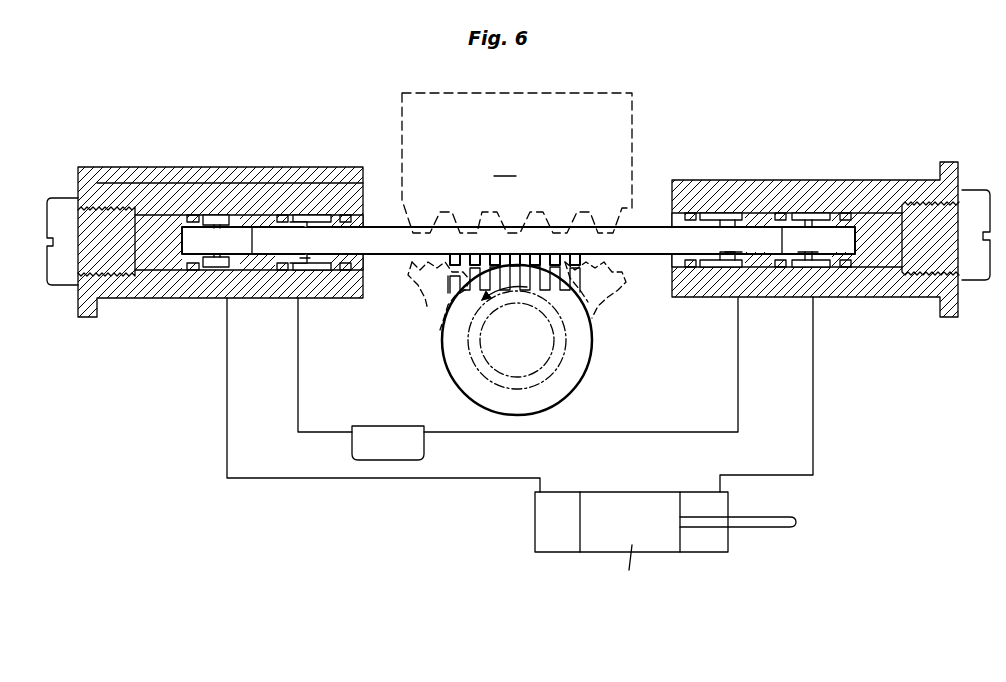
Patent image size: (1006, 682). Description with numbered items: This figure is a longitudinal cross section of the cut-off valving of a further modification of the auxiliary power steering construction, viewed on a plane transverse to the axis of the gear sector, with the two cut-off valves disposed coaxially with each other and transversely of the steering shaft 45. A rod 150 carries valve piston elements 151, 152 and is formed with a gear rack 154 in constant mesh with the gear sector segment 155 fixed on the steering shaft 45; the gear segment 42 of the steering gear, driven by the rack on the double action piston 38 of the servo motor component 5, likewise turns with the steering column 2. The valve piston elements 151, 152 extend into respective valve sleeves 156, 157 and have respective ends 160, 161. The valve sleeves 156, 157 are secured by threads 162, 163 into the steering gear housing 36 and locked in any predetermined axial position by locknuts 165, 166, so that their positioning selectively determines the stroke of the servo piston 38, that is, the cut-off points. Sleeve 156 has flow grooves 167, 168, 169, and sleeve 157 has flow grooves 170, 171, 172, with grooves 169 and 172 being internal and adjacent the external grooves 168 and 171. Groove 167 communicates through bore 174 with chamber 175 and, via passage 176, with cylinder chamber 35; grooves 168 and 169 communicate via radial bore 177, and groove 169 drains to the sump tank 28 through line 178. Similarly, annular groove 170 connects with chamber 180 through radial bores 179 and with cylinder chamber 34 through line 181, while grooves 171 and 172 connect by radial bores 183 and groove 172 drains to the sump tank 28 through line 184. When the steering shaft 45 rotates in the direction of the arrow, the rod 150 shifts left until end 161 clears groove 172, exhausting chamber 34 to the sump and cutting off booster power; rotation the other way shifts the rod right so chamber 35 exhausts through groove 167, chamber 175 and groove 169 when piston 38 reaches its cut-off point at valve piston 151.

The steering column 2 is at (763, 526).
The servo motor component 5 is at (653, 490).
The sump tank 28 is at (381, 440).
The cylinder chamber 34 is at (706, 545).
The cylinder chamber 35 is at (561, 545).
The steering gear housing 36 is at (883, 282).
The double action piston 38 is at (522, 342).
The gear segment 42 is at (418, 280).
The steering shaft 45 is at (468, 328).
The rod 150 is at (648, 232).
The valve piston element 151 is at (372, 240).
The valve piston element 152 is at (775, 240).
The gear rack 154 is at (596, 268).
The gear sector segment 155 is at (562, 300).
The valve sleeve 156 is at (118, 232).
The valve sleeve 157 is at (905, 205).
The end 160 is at (252, 240).
The end 161 is at (802, 222).
The threads 162 is at (103, 212).
The threads 163 is at (936, 207).
The locknut 165 is at (60, 205).
The locknut 166 is at (977, 205).
The flow groove 167 is at (217, 270).
The flow groove 168 is at (322, 270).
The flow groove 169 is at (300, 215).
The annular groove 170 is at (832, 215).
The flow groove 171 is at (690, 213).
The flow groove 172 is at (740, 220).
The bore 174 is at (220, 218).
The chamber 175 is at (192, 215).
The passage 176 is at (257, 480).
The radial bore 177 is at (300, 266).
The line 178 is at (297, 390).
The radial bores 179 is at (806, 268).
The chamber 180 is at (858, 240).
The line 181 is at (812, 372).
The radial bores 183 is at (737, 264).
The line 184 is at (737, 378).